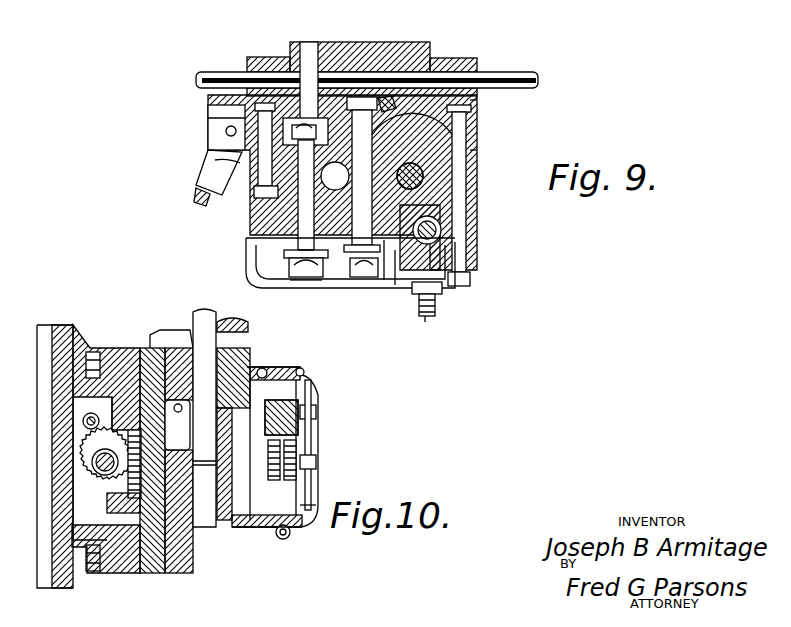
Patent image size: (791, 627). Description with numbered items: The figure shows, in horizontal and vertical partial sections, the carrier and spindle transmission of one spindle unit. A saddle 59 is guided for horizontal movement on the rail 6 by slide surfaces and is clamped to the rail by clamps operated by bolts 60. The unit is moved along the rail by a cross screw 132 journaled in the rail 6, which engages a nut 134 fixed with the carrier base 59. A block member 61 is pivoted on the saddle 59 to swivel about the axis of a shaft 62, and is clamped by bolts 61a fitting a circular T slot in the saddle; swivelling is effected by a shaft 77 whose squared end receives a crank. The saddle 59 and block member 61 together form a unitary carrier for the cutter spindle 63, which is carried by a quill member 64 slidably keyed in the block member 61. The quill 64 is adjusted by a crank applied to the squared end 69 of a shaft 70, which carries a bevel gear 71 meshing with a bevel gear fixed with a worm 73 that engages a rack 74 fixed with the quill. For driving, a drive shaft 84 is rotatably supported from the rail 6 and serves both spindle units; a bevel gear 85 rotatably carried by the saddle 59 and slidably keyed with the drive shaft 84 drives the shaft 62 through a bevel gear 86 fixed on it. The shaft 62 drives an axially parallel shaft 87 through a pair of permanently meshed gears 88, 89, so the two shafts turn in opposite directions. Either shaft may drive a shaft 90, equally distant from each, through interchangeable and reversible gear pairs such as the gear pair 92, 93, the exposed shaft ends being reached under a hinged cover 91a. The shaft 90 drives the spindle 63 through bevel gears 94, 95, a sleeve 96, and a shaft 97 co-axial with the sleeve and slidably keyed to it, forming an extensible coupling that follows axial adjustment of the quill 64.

In FIG. 10, the rail 6 is at (76, 345).
In FIG. 9, the saddle 59 is at (478, 102).
In FIG. 10, the saddle 59 is at (120, 365).
In FIG. 10, the bolts 60 is at (93, 352).
In FIG. 9, the block member 61 is at (470, 152).
In FIG. 10, the block member 61 is at (175, 552).
In FIG. 9, the bolts 61a is at (262, 168).
In FIG. 9, the shaft 62 is at (348, 245).
In FIG. 10, the shaft 62 is at (314, 463).
In FIG. 9, the cutter spindle 63 is at (422, 174).
In FIG. 9, the quill member 64 is at (432, 172).
In FIG. 10, the quill member 64 is at (238, 333).
In FIG. 9, the squared end 69 is at (426, 318).
In FIG. 9, the shaft 70 is at (438, 296).
In FIG. 9, the bevel gear 71 is at (470, 262).
In FIG. 9, the worm 73 is at (442, 232).
In FIG. 9, the rack 74 is at (447, 208).
In FIG. 9, the shaft 77 is at (198, 200).
In FIG. 9, the drive shaft 84 is at (500, 77).
In FIG. 10, the drive shaft 84 is at (97, 478).
In FIG. 9, the bevel gear 85 is at (318, 100).
In FIG. 10, the bevel gear 85 is at (110, 484).
In FIG. 9, the bevel gear 86 is at (385, 98).
In FIG. 10, the bevel gear 86 is at (192, 520).
In FIG. 9, the shaft 87 is at (292, 255).
In FIG. 9, the gear 88 is at (386, 250).
In FIG. 10, the gear 88 is at (252, 528).
In FIG. 9, the gear 89 is at (286, 226).
In FIG. 10, the shaft 90 is at (288, 425).
In FIG. 9, the hinged cover 91a is at (300, 281).
In FIG. 10, the hinged cover 91a is at (316, 440).
In FIG. 9, the gear 92 is at (400, 252).
In FIG. 10, the gear 92 is at (310, 492).
In FIG. 10, the gear 93 is at (300, 430).
In FIG. 10, the bevel gear 94 is at (226, 520).
In FIG. 10, the bevel gear 95 is at (177, 425).
In FIG. 10, the sleeve 96 is at (240, 352).
In FIG. 10, the shaft 97 is at (195, 341).
In FIG. 10, the cross screw 132 is at (100, 414).
In FIG. 10, the nut 134 is at (106, 453).